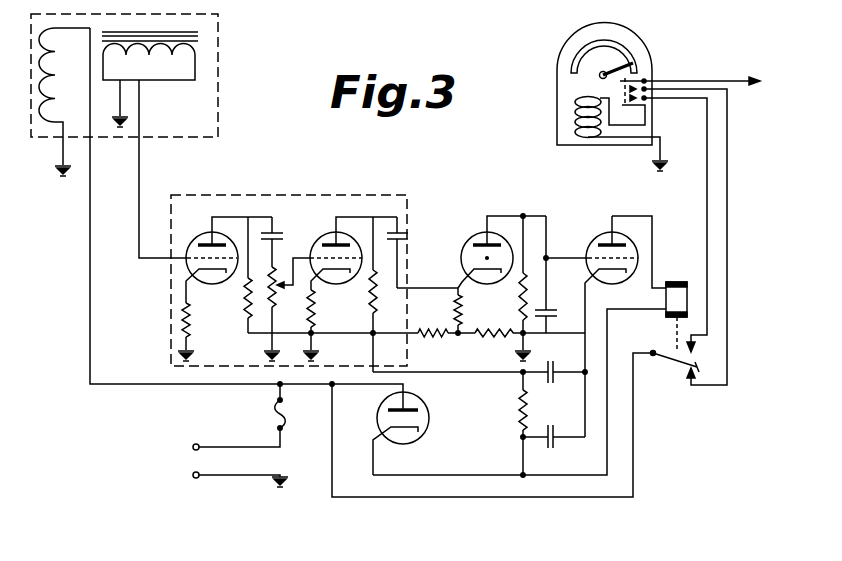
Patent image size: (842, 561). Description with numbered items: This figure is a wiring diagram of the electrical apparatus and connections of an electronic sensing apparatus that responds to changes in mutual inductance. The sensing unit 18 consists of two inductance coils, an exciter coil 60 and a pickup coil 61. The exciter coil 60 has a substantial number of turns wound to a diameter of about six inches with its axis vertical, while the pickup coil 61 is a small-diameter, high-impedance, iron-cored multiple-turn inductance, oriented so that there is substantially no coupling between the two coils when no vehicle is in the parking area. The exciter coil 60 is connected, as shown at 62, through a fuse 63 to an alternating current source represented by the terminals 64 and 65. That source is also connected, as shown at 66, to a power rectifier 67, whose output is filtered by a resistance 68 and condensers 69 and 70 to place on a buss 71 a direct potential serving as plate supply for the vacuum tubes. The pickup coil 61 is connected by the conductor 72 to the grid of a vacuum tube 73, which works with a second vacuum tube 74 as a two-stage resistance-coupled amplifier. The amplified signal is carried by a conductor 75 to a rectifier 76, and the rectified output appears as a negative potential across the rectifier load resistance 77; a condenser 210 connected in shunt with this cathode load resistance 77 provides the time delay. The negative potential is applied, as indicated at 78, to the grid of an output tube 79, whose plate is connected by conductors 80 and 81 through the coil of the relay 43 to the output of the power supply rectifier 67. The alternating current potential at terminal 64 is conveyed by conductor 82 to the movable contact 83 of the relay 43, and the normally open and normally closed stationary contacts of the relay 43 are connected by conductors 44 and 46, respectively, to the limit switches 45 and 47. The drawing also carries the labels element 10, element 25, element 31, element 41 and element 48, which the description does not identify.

The meter 10 is at (556, 78).
The sensing unit 18 is at (218, 92).
The meter pointer 25 is at (617, 63).
The meter coil 31 is at (575, 115).
The amplifier unit 41 is at (347, 192).
The relay 43 is at (673, 293).
The conductor 44 is at (707, 194).
The limit switch 45 is at (640, 106).
The conductor 46 is at (729, 183).
The limit switch 47 is at (641, 78).
The output conductor 48 is at (708, 80).
The exciter coil 60 is at (53, 125).
The pickup coil 61 is at (198, 52).
The connection 62 is at (105, 387).
The fuse 63 is at (275, 408).
The terminal 64 is at (193, 444).
The terminal 65 is at (193, 478).
The connection 66 is at (420, 398).
The power rectifier 67 is at (431, 433).
The resistance 68 is at (520, 413).
The condenser 69 is at (553, 367).
The condenser 70 is at (554, 432).
The buss 71 is at (448, 371).
The conductor 72 is at (142, 182).
The vacuum tube 73 is at (203, 233).
The vacuum tube 74 is at (318, 236).
The conductor 75 is at (423, 287).
The rectifier 76 is at (478, 233).
The rectifier load resistance 77 is at (522, 295).
The connection 78 is at (583, 255).
The output tube 79 is at (603, 231).
The conductor 80 is at (652, 272).
The conductor 81 is at (643, 310).
The conductor 82 is at (512, 498).
The movable contact 83 is at (672, 368).
The condenser 210 is at (551, 310).